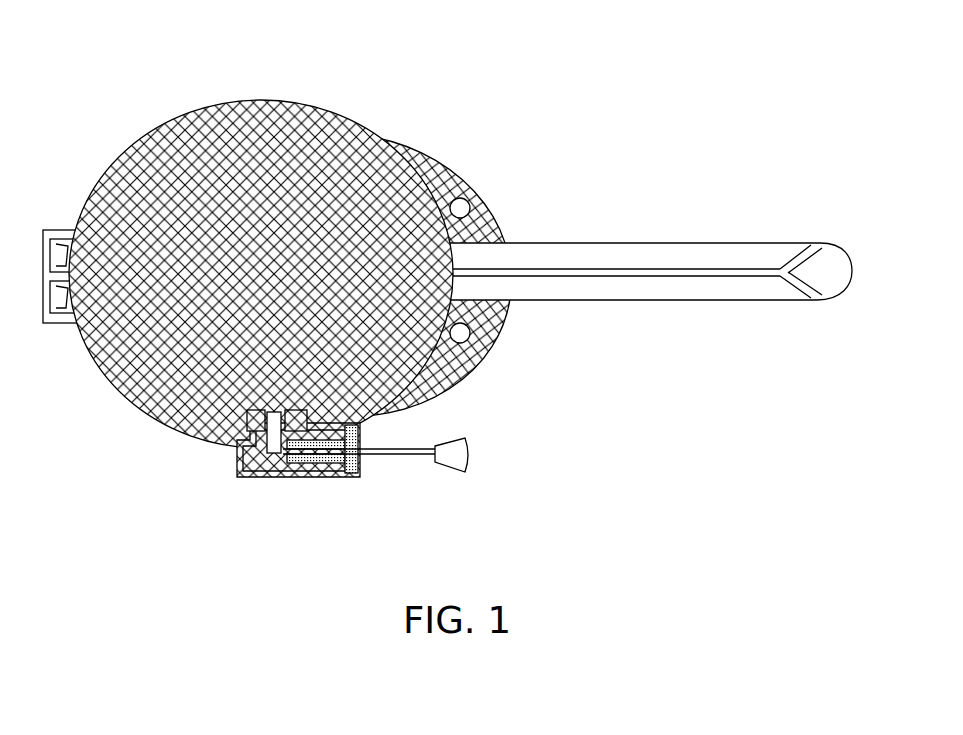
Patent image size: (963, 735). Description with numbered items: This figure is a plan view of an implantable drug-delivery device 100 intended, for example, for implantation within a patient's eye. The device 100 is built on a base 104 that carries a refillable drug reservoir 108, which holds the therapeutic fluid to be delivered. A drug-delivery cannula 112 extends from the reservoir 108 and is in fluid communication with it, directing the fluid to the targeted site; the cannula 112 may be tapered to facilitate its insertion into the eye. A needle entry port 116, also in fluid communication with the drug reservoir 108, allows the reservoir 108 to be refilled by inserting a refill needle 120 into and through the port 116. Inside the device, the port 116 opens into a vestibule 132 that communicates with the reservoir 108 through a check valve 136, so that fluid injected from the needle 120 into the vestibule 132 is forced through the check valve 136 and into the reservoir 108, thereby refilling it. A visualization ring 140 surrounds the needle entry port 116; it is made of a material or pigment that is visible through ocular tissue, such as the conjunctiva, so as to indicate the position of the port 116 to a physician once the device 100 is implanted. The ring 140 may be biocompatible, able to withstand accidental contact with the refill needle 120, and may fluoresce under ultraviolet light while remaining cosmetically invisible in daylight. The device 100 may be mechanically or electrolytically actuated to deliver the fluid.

The implantable drug-delivery device 100 is at (395, 86).
The base 104 is at (468, 178).
The refillable drug reservoir 108 is at (150, 170).
The drug-delivery cannula 112 is at (718, 243).
The needle entry port 116 is at (368, 460).
The refill needle 120 is at (400, 444).
The vestibule 132 is at (241, 477).
The check valve 136 is at (240, 445).
The visualization ring 140 is at (352, 475).